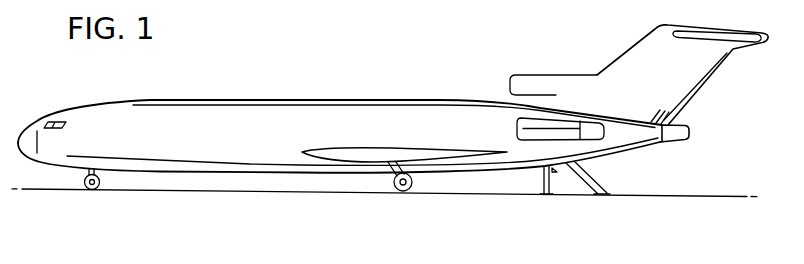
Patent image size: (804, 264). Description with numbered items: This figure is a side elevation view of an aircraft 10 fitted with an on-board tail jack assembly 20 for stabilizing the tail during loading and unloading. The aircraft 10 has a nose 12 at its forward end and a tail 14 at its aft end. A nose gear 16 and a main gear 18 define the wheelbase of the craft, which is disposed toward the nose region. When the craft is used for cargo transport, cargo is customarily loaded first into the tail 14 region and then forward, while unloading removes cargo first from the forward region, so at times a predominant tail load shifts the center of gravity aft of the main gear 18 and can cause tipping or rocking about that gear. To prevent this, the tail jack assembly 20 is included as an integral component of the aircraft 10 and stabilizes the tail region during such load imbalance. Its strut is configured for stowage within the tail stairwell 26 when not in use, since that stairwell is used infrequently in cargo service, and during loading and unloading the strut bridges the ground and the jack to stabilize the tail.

The aircraft 10 is at (225, 106).
The nose 12 is at (31, 129).
The tail 14 is at (661, 148).
The nose gear 16 is at (88, 190).
The main gear 18 is at (397, 188).
The tail jack assembly 20 is at (556, 180).
The tail stairwell 26 is at (611, 186).